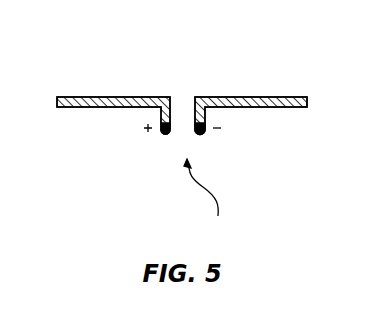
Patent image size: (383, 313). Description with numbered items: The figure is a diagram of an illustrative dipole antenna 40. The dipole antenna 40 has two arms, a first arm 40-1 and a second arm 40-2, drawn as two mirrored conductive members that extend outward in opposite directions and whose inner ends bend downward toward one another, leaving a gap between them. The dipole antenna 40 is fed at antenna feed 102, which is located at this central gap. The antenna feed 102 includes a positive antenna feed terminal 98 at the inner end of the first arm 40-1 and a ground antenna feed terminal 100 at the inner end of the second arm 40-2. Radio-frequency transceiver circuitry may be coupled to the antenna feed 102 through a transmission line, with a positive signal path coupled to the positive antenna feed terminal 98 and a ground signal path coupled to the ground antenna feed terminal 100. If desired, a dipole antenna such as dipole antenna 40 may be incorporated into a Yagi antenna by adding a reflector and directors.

The dipole antenna 40 is at (58, 80).
The first arm 40-1 is at (95, 107).
The second arm 40-2 is at (275, 107).
The positive antenna feed terminal 98 is at (165, 134).
The ground antenna feed terminal 100 is at (200, 134).
The antenna feed 102 is at (207, 200).